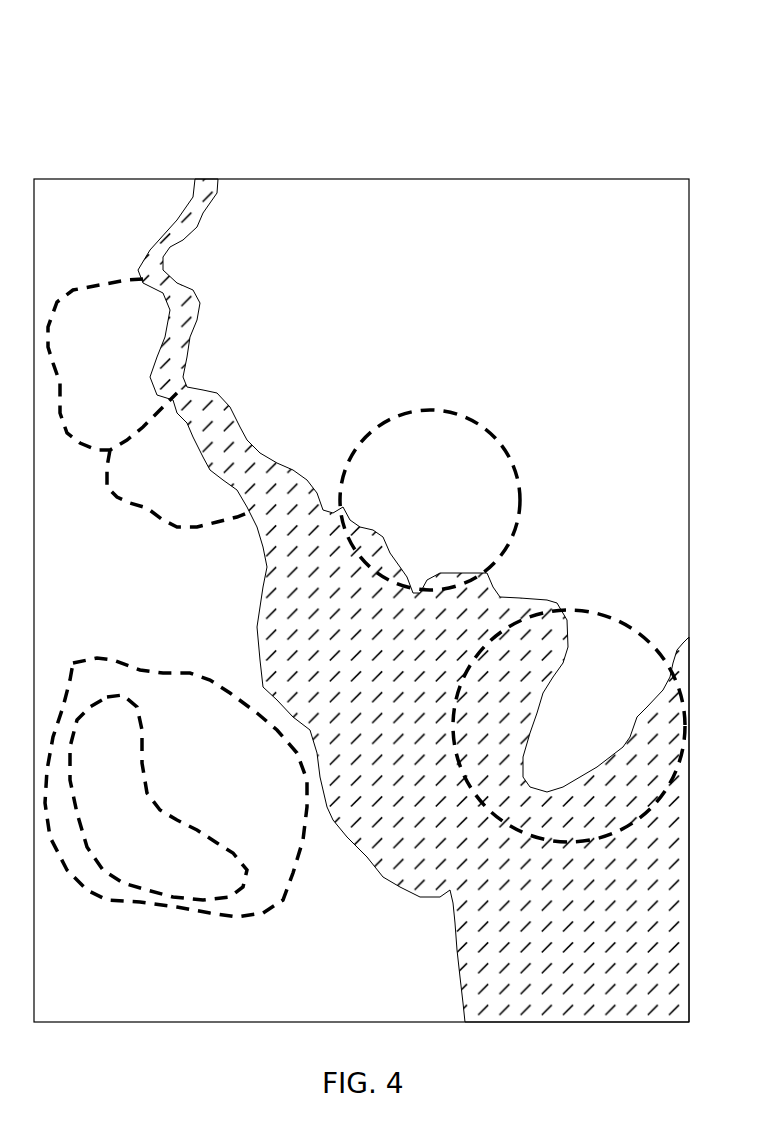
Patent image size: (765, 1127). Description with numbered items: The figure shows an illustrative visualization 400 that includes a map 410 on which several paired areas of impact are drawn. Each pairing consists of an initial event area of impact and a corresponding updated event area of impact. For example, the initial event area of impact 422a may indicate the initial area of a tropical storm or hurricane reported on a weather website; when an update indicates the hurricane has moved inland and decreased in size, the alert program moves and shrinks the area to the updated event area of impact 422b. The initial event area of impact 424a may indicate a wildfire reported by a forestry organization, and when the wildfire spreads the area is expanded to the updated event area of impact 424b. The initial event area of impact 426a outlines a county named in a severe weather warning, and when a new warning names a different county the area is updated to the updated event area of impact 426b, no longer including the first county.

The illustrative visualization 400 is at (576, 128).
The map 410 is at (92, 178).
The initial event area of impact 422a is at (615, 640).
The updated event area of impact 422b is at (458, 440).
The initial event area of impact 424a is at (210, 863).
The updated event area of impact 424b is at (205, 707).
The initial event area of impact 426a is at (105, 318).
The updated event area of impact 426b is at (208, 498).